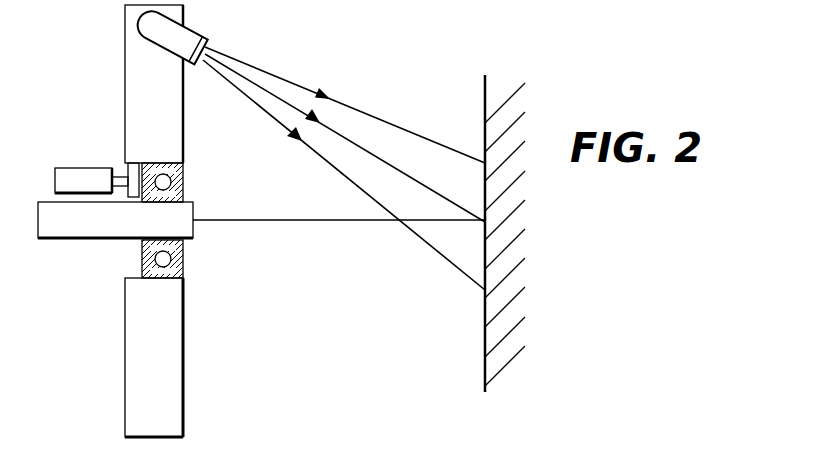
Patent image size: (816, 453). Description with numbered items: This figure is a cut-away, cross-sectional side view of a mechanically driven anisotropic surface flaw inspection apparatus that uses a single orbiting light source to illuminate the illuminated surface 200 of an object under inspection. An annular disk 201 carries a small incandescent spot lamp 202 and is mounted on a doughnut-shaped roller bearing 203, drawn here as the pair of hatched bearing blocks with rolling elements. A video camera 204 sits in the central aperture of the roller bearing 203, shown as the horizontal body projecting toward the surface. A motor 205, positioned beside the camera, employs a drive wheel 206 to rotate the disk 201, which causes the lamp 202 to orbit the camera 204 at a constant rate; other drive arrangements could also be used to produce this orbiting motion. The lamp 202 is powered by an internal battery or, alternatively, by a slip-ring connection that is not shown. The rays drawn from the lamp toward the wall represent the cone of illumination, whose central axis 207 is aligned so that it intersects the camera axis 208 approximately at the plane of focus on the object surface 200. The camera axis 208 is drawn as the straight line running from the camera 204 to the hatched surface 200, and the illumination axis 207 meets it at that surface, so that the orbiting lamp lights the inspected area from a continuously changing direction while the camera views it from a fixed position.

The illuminated surface 200 is at (485, 313).
The annular disk 201 is at (183, 356).
The incandescent spot lamp 202 is at (197, 34).
The roller bearing 203 is at (183, 197).
The video camera 204 is at (73, 239).
The motor 205 is at (68, 176).
The drive wheel 206 is at (122, 168).
The central axis of cone of illumination 207 is at (393, 167).
The camera axis 208 is at (477, 222).